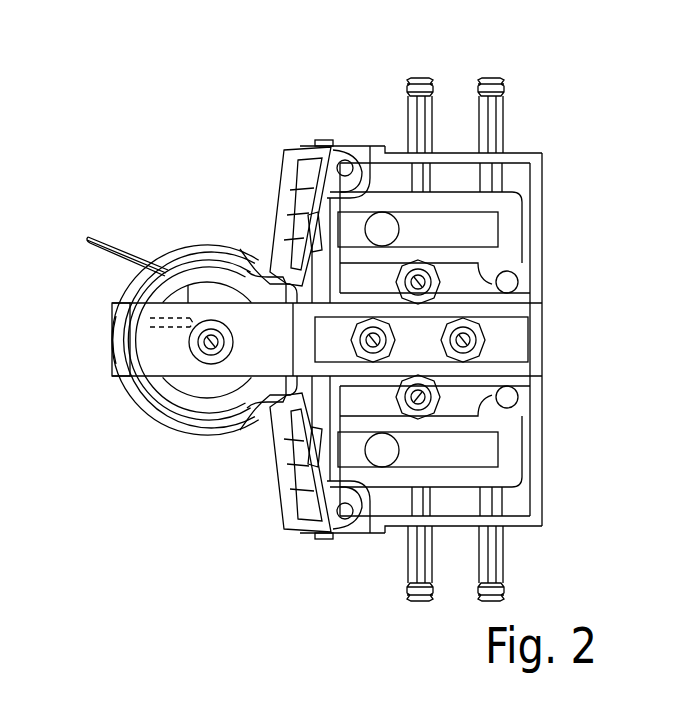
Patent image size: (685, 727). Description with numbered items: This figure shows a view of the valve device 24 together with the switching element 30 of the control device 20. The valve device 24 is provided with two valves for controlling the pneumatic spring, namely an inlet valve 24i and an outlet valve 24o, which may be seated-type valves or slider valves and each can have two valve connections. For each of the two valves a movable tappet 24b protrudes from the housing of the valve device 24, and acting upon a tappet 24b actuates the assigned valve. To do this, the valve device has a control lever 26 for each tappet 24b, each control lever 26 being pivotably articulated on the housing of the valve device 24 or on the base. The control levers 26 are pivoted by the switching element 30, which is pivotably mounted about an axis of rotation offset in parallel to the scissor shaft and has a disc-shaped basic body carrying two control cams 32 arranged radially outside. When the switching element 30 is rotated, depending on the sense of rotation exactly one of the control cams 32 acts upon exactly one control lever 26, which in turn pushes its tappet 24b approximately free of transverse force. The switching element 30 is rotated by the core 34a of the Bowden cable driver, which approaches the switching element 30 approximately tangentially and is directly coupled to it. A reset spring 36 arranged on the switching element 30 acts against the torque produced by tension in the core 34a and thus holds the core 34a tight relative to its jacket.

The control device 20 is at (162, 162).
The valve device 24 is at (533, 152).
The inlet valve 24i is at (477, 220).
The outlet valve 24o is at (465, 443).
The tappet 24b is at (338, 140).
The control lever 26 is at (278, 157).
The switching element 30 is at (170, 420).
The control cam 32 is at (233, 246).
The core 34a is at (107, 240).
The reset spring 36 is at (133, 290).